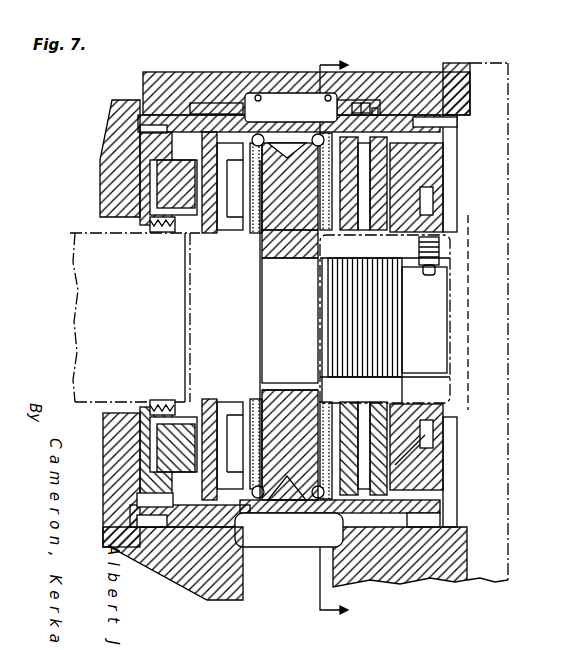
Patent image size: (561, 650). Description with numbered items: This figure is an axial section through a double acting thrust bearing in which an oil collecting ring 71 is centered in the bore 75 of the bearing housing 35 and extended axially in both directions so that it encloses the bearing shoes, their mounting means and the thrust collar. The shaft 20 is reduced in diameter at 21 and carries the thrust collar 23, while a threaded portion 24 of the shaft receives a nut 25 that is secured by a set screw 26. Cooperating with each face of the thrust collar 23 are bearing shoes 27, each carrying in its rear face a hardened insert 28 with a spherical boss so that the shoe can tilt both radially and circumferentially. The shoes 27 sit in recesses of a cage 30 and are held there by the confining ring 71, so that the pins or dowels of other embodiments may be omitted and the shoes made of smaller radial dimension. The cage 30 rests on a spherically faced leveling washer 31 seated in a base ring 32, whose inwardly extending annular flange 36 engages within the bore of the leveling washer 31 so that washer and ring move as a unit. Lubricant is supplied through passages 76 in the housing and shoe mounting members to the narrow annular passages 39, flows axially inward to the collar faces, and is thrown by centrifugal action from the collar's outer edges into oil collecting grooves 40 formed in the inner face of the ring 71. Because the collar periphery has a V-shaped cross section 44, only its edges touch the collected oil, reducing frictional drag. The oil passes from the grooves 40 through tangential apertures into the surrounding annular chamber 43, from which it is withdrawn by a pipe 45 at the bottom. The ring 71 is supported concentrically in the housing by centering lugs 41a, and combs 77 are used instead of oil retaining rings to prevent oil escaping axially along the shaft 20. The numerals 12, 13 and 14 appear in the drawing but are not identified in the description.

The bracket 12 is at (448, 89).
The screw 13 is at (376, 108).
The bracket plate 14 is at (420, 114).
The shaft 20 is at (93, 400).
The reduced diameter portion 21 is at (270, 303).
The thrust collar 23 is at (262, 262).
The threaded portion 24 is at (360, 343).
The nut 25 is at (367, 250).
The set screw 26 is at (417, 270).
The bearing shoes 27 is at (245, 407).
The hardened insert 28 is at (223, 413).
The cage 30 is at (367, 402).
The leveling washer 31 is at (410, 452).
The base ring 32 is at (430, 165).
The bearing housing 35 is at (234, 86).
The annular flange 36 is at (347, 402).
The annular passage 39 is at (219, 240).
The oil collecting grooves 40 is at (372, 97).
The centering lugs 41a is at (300, 568).
The annular chamber 43 is at (259, 94).
The V-shaped periphery 44 is at (290, 445).
The pipe 45 is at (257, 575).
The oil collecting ring 71 is at (291, 107).
The bore 75 is at (440, 125).
The passages 76 is at (128, 100).
The combs 77 is at (163, 403).